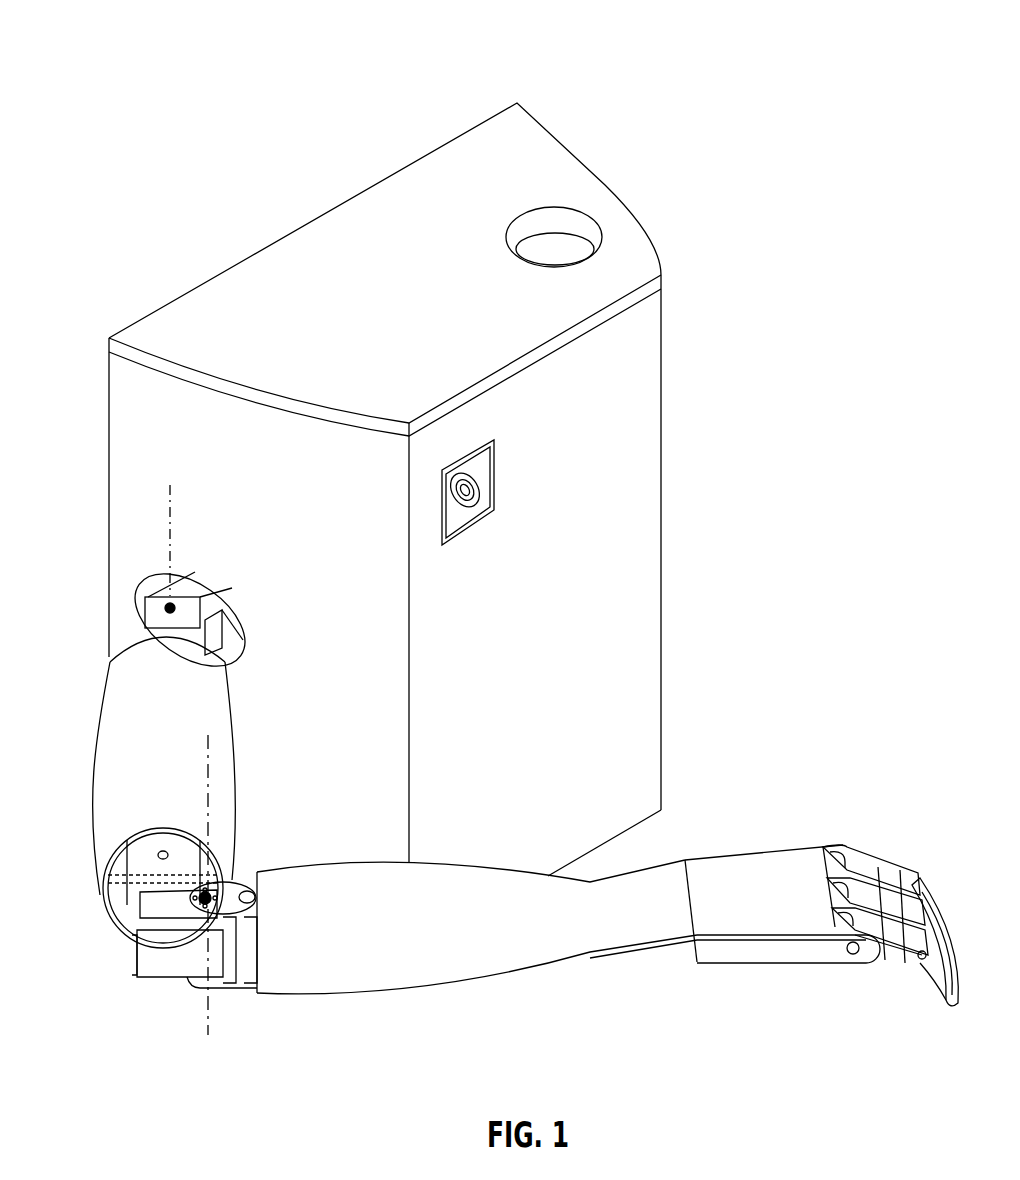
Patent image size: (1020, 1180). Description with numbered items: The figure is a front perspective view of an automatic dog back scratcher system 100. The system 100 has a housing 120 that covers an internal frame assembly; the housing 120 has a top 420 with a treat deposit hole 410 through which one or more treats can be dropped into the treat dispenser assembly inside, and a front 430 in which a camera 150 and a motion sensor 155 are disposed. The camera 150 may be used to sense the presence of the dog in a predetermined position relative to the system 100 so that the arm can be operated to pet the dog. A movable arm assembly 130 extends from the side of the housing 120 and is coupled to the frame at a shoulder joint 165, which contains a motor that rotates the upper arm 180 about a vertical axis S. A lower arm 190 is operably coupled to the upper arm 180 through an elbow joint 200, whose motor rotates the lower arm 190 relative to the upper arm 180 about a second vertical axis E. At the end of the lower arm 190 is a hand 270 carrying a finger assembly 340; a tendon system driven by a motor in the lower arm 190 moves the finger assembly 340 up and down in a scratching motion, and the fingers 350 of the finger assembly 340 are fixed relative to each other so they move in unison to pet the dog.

The automatic dog back scratcher system 100 is at (804, 41).
The housing 120 is at (666, 497).
The movable arm assembly 130 is at (90, 898).
The camera 150 is at (472, 526).
The motion sensor 155 is at (483, 490).
The shoulder joint 165 is at (140, 583).
The upper arm 180 is at (94, 705).
The lower arm 190 is at (340, 1005).
The elbow joint 200 is at (163, 988).
The hand 270 is at (857, 985).
The finger assembly 340 is at (890, 854).
The fingers 350 is at (938, 988).
The treat deposit hole 410 is at (584, 228).
The top 420 is at (426, 288).
The front 430 is at (610, 607).
The vertical axis S is at (171, 512).
The vertical axis E is at (210, 762).